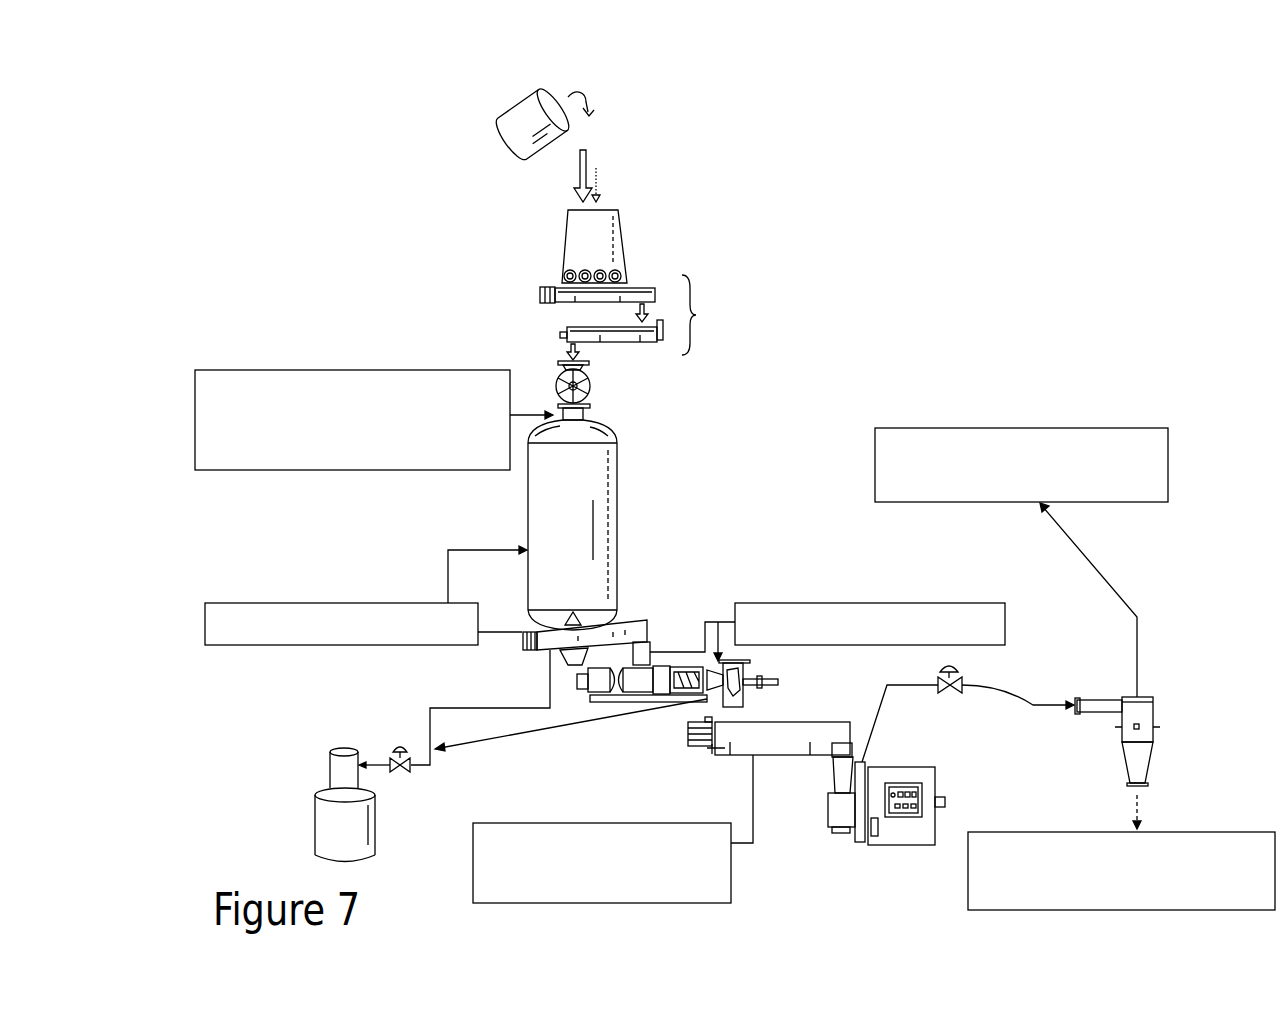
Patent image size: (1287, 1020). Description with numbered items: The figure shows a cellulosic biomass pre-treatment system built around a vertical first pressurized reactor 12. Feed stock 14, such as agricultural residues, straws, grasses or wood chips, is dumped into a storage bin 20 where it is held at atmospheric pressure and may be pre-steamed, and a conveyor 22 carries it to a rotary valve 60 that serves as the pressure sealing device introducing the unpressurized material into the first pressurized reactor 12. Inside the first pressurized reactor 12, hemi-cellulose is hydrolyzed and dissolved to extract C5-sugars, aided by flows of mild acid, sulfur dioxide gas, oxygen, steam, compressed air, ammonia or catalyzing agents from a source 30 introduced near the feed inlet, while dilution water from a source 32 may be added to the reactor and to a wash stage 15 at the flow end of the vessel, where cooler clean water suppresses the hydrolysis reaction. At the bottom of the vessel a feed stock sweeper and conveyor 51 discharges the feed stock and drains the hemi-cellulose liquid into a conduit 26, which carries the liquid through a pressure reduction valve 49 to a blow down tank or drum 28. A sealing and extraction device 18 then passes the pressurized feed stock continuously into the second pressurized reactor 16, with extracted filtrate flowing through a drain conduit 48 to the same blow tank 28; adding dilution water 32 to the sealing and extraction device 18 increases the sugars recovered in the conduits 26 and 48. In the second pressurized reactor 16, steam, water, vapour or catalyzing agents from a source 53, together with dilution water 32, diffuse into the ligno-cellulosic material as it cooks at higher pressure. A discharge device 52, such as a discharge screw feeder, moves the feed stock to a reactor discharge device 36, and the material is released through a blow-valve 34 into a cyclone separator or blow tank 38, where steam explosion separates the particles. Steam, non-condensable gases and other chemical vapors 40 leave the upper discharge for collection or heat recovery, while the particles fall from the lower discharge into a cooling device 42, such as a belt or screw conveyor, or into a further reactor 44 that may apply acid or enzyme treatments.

The feed stock 14 is at (505, 120).
The storage bin 20 is at (565, 244).
The conveyor 22 is at (635, 317).
The rotary valve 60 is at (593, 392).
The first pressurized reactor 12 is at (603, 525).
The wash stage 15 is at (597, 573).
The feed stock sweeper and conveyor 51 is at (662, 666).
The sealing and extraction device 18 is at (706, 657).
The source of mild acid, sulfur dioxide, oxygen, compressed air, ammonia, steam or c 30 is at (355, 472).
The dilution water source 32 is at (238, 647).
The conduit 26 is at (470, 703).
The pressure reduction valve 49 is at (398, 752).
The blow down tank or drum 28 is at (378, 817).
The drain conduit 48 is at (543, 730).
The second pressurized reactor 16 is at (707, 750).
The discharge device 52 is at (825, 806).
The reactor discharge device 36 is at (925, 765).
The blow-valve 34 is at (965, 662).
The cyclone separator or blow tank 38 is at (1158, 708).
The source of steam, water, vapour or catalyzing agents 53 is at (733, 890).
The steam, non-condensable gases and other chemical vapors 40 is at (952, 428).
The cooling device 42 is at (1110, 890).
The further reactor 44 is at (1035, 912).